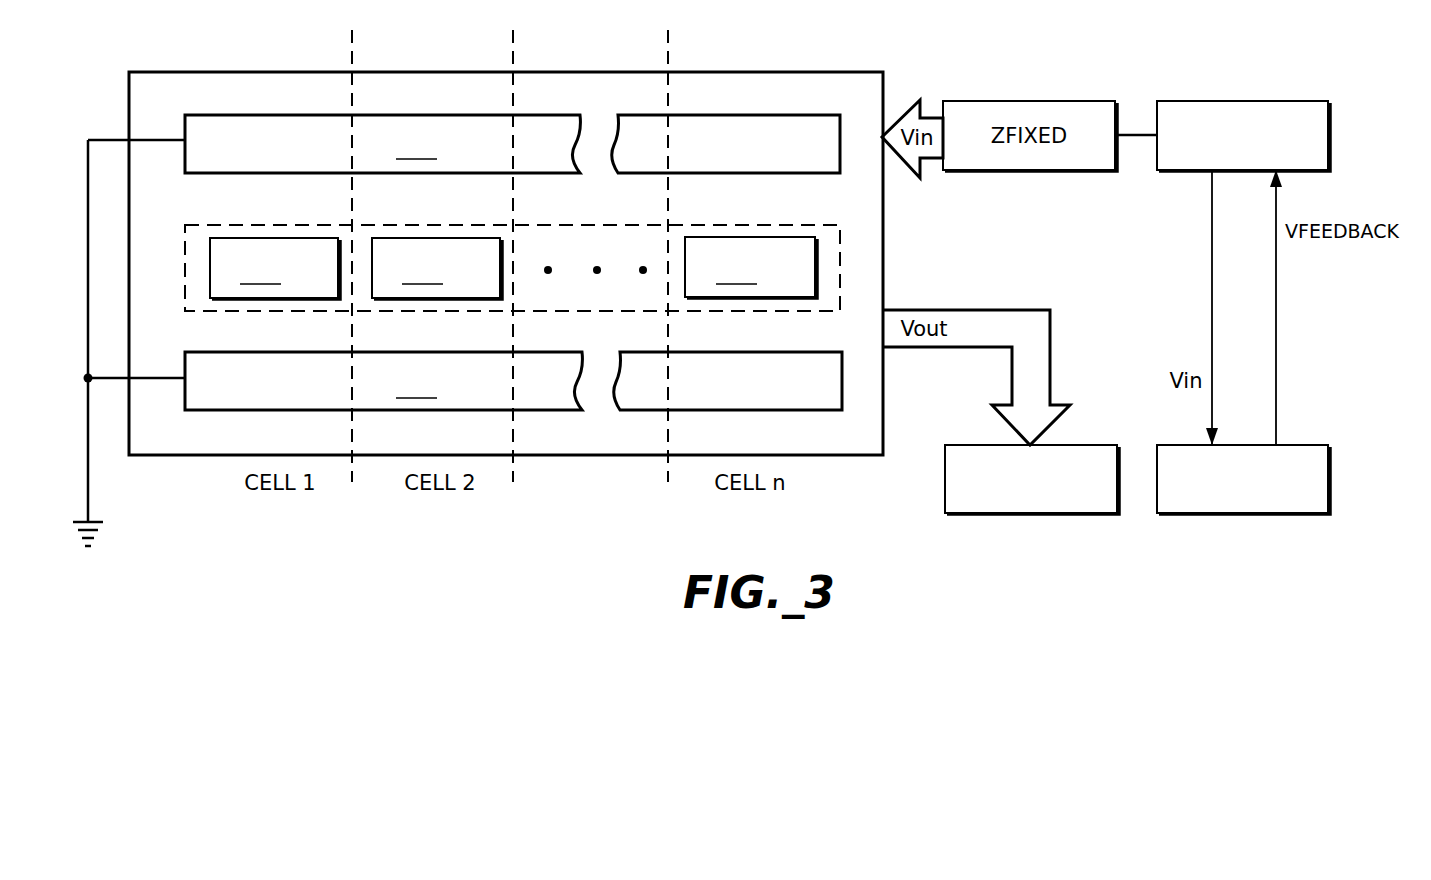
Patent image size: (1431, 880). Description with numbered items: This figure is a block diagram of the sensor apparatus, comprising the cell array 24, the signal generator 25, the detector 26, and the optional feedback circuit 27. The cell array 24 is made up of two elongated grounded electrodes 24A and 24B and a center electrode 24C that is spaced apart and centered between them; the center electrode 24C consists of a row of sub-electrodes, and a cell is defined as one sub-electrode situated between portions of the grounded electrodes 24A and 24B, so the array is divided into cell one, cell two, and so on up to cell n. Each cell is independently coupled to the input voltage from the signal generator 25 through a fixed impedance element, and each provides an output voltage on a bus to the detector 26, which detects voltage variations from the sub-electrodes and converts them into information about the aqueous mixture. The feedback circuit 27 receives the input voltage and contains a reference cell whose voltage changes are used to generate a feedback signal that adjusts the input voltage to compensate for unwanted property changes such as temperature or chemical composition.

The cell array 24 is at (196, 72).
The grounded electrode 24A is at (537, 115).
The grounded electrode 24B is at (540, 410).
The center electrode 24C is at (553, 224).
The signal generator 25 is at (1220, 101).
The detector 26 is at (975, 445).
The feedback circuit 27 is at (1172, 445).